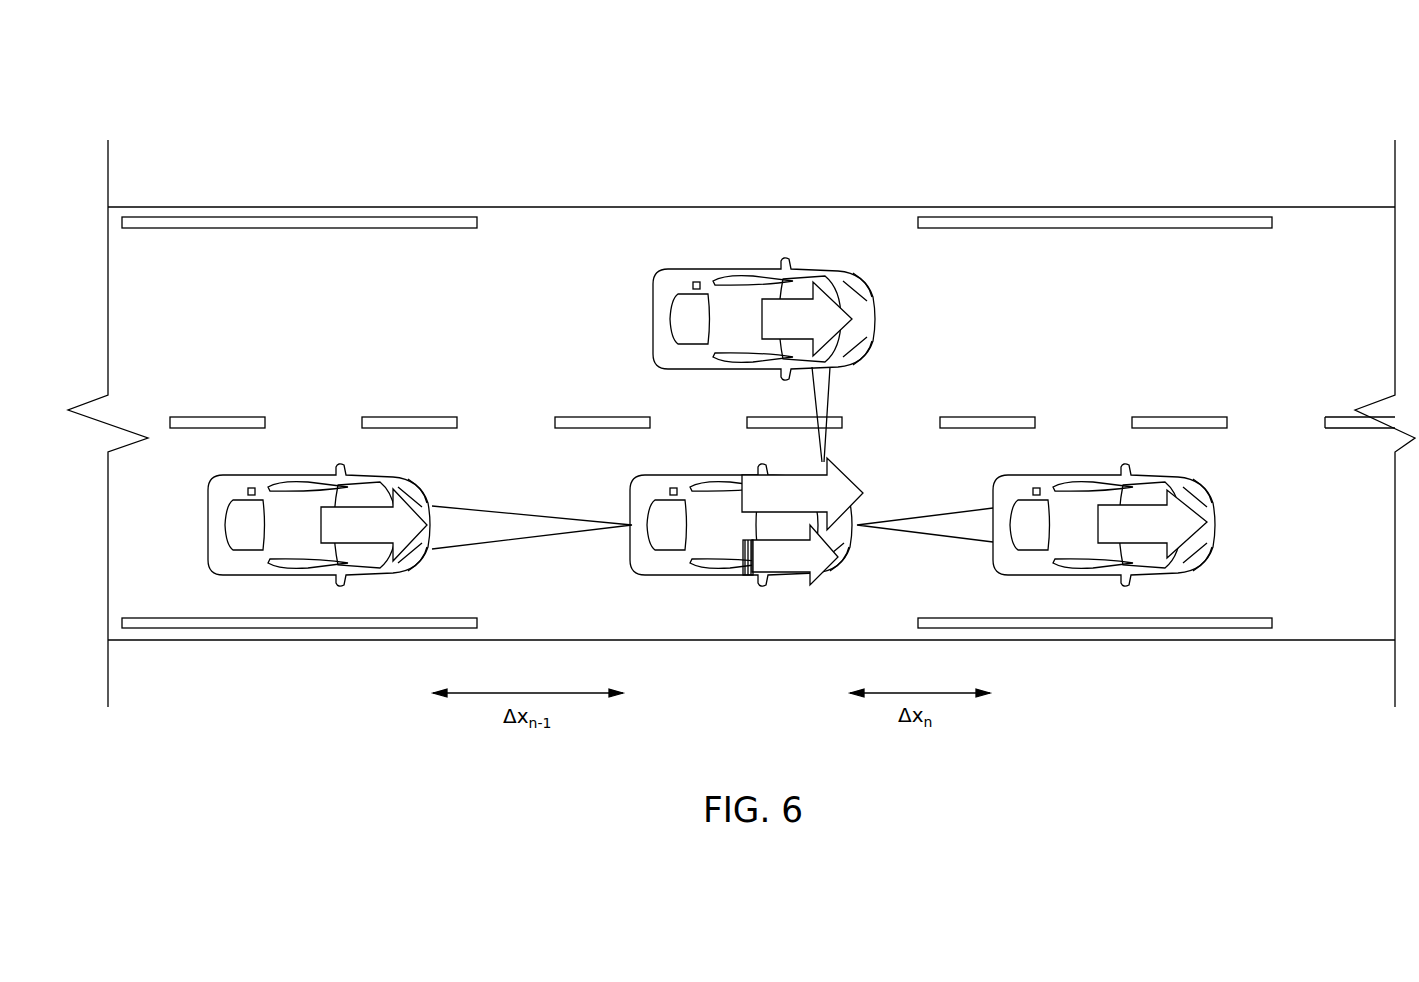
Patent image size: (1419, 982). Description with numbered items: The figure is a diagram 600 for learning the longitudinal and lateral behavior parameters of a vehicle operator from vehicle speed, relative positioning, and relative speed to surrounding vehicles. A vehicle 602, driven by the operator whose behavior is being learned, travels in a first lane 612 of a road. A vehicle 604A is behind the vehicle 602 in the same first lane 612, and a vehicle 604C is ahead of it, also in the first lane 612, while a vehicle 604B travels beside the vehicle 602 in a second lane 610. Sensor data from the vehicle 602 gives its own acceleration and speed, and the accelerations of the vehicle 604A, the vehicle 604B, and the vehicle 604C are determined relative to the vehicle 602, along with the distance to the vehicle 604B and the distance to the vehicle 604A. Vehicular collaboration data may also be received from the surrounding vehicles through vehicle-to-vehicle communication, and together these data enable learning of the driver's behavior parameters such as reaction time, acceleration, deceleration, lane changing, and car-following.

The diagram 600 is at (337, 81).
The vehicle 602 is at (715, 533).
The vehicle 604A is at (300, 537).
The vehicle 604B is at (735, 308).
The vehicle 604C is at (1085, 538).
The second lane 610 is at (1085, 303).
The first lane 612 is at (1350, 529).